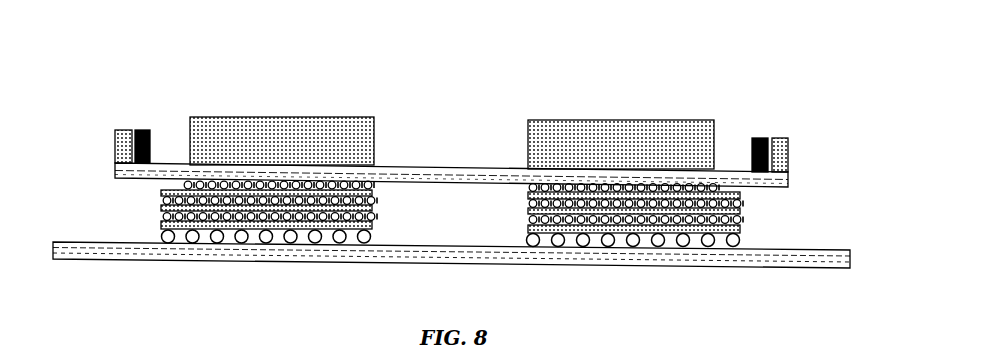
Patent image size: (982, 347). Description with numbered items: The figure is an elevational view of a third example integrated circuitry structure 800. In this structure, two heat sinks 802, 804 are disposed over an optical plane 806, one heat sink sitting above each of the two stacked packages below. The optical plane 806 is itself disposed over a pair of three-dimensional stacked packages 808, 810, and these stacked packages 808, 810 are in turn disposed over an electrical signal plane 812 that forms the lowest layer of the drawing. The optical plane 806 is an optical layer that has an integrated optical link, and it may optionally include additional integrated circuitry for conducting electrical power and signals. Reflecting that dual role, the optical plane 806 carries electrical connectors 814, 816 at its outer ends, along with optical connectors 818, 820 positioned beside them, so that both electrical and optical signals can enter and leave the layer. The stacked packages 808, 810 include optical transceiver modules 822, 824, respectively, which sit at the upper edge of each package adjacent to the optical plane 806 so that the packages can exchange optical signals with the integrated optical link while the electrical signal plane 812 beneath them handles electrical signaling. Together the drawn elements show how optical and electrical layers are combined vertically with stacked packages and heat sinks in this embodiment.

The integrated circuitry structure 800 is at (466, 44).
The heat sink 802 is at (283, 116).
The heat sink 804 is at (628, 119).
The optical plane 806 is at (471, 166).
The 3D stacked package 808 is at (251, 210).
The 3D stacked package 810 is at (650, 215).
The electrical signal plane 812 is at (448, 262).
The electrical connector 814 is at (123, 130).
The electrical connector 816 is at (780, 138).
The optical connector 818 is at (143, 130).
The optical connector 820 is at (760, 138).
The optical transceiver module 822 is at (161, 191).
The optical transceiver module 824 is at (741, 195).